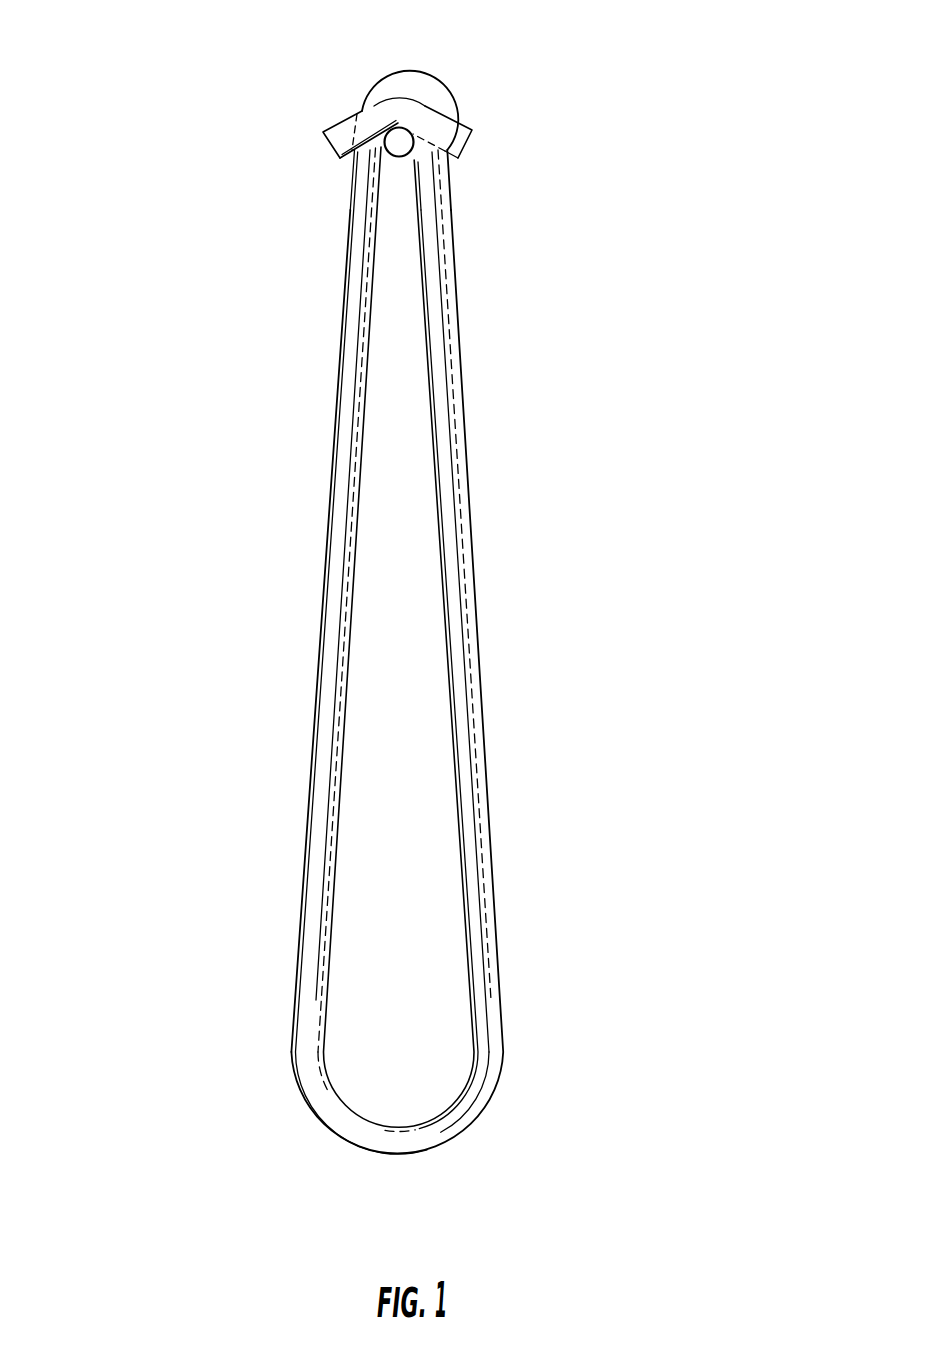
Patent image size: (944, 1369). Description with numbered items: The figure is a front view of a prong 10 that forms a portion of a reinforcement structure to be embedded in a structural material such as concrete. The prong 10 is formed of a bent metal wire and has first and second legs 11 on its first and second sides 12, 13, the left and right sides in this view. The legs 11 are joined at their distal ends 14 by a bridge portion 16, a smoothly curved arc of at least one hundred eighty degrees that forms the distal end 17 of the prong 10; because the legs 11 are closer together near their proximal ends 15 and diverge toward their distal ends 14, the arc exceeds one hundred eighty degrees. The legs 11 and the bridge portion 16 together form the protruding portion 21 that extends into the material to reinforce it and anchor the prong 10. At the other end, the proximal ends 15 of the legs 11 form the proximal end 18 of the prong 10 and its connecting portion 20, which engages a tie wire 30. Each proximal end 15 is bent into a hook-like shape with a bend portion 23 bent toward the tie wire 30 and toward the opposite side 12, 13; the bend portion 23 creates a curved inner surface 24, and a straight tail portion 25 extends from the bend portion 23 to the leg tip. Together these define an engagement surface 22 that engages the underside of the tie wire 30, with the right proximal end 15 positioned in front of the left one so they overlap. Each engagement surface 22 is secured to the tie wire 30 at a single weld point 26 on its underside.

The prong 10 is at (190, 543).
The legs 11 is at (325, 765).
The first side 12 is at (300, 644).
The second side 13 is at (495, 586).
The distal ends 14 is at (293, 1038).
The proximal ends 15 is at (347, 163).
The bridge portion 16 is at (427, 1135).
The distal end of the prong 17 is at (348, 1157).
The proximal end of the prong 18 is at (329, 68).
The connecting portion 20 is at (303, 126).
The protruding portion 21 is at (292, 865).
The engagement surface 22 is at (410, 132).
The bend portion 23 is at (400, 97).
The curved inner surface 24 is at (417, 152).
The tail portion 25 is at (460, 133).
The weld point 26 is at (400, 128).
The tie wire 30 is at (400, 160).